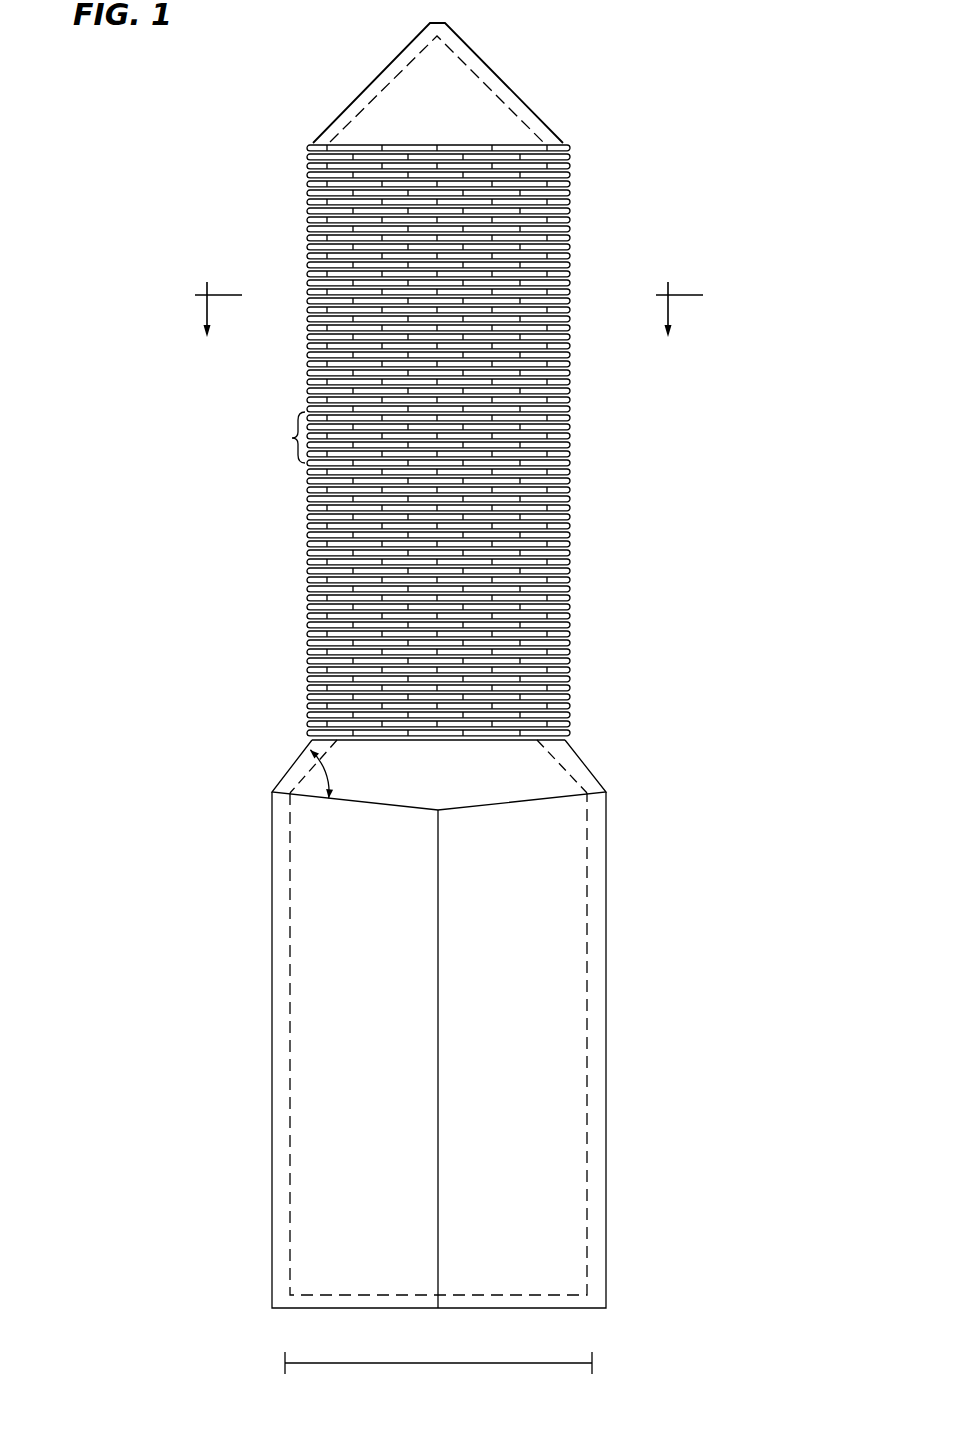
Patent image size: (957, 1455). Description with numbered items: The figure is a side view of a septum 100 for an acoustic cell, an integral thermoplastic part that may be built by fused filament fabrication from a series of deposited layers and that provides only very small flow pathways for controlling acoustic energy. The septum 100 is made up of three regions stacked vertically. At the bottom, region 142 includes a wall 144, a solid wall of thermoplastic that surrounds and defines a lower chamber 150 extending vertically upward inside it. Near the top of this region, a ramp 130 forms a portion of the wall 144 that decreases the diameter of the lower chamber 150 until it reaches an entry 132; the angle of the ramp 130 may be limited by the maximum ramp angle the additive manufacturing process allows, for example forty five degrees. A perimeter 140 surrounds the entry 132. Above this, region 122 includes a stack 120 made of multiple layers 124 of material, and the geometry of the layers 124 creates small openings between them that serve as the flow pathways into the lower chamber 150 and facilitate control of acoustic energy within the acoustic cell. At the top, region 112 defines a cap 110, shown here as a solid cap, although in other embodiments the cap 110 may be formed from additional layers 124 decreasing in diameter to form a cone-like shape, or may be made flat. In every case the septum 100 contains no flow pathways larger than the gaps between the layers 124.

The septum 100 is at (190, 123).
The cap 110 is at (524, 96).
The region 112 is at (790, 23).
The stack 120 is at (570, 626).
The region 122 is at (790, 152).
The layers 124 is at (574, 432).
The ramp 130 is at (601, 781).
The entry 132 is at (388, 790).
The perimeter 140 is at (556, 741).
The region 142 is at (790, 750).
The wall 144 is at (598, 955).
The lower chamber 150 is at (565, 1062).